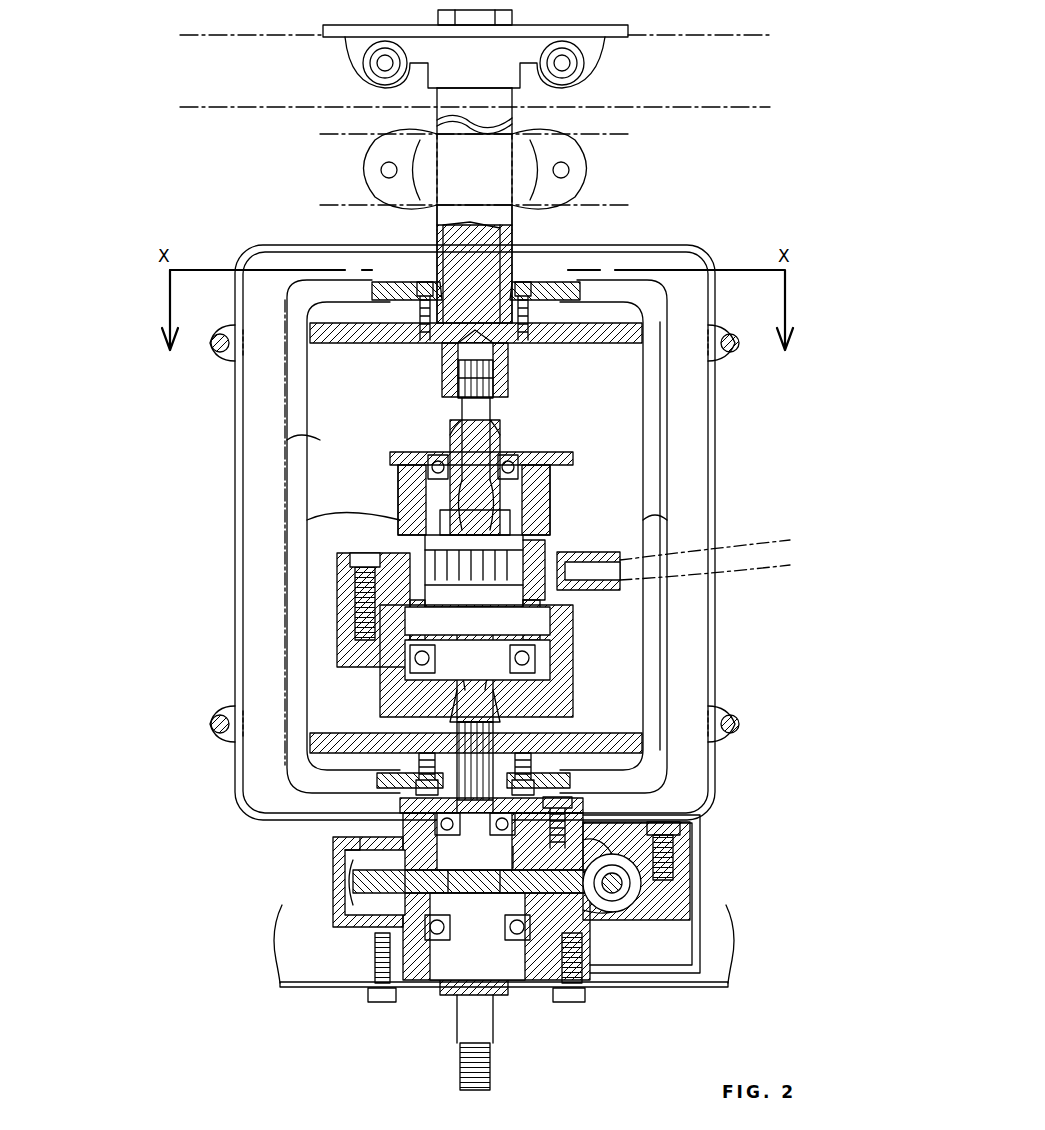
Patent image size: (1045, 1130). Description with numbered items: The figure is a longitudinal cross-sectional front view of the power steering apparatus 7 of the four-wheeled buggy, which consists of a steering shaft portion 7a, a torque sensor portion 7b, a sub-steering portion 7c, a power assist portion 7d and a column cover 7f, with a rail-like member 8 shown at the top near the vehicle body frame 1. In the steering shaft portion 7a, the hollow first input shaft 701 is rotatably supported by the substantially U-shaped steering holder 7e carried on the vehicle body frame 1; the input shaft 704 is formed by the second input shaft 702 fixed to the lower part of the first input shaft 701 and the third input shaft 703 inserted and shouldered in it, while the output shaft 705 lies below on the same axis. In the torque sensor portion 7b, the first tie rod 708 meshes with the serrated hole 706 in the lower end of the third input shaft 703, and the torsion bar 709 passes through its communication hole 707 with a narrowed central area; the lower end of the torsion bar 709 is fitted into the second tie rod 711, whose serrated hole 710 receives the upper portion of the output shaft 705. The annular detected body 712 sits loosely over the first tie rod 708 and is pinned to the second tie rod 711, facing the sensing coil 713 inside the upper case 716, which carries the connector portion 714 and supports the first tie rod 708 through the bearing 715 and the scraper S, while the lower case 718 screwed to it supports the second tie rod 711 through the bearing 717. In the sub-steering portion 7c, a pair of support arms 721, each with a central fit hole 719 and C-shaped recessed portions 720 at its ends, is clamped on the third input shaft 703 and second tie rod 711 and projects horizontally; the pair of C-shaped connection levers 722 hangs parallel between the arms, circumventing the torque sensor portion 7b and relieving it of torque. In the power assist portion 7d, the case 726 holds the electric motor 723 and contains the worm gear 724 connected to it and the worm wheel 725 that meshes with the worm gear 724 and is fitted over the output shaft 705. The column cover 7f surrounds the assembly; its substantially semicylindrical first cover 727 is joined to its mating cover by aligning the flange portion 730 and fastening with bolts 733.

The rail 8 is at (296, 52).
The steering shaft portion 7a is at (433, 121).
The vehicle body frame 1 is at (350, 133).
The power steering apparatus 7 is at (245, 228).
The first input shaft 701 is at (545, 135).
The steering holder 7e is at (562, 195).
The column cover 7f is at (712, 238).
The first cover 727 is at (716, 262).
The input shaft 704 is at (434, 240).
The second input shaft 702 is at (505, 246).
The recessed portion 720 is at (320, 330).
The support arms 721 is at (520, 345).
The bolts 733 is at (212, 345).
The flange portion 730 is at (222, 358).
The fit hole 719 is at (315, 348).
The third input shaft 703 is at (430, 366).
The serrated hole 706 is at (450, 400).
The communication hole 707 is at (435, 460).
The first tie rod 708 is at (505, 425).
The torsion bar 709 is at (505, 440).
The scraper S is at (520, 425).
The bearing 715 is at (556, 460).
The detected body 712 is at (550, 490).
The sensing coil 713 is at (548, 515).
The connection levers 722 is at (285, 443).
The torque sensor portion 7b is at (393, 480).
The sub-steering portion 7c is at (670, 480).
The upper case 716 is at (308, 520).
The connector portion 714 is at (622, 572).
The lower case 718 is at (340, 655).
The bearing 717 is at (535, 640).
The serrated hole 710 is at (418, 703).
The second tie rod 711 is at (525, 708).
The output shaft 705 is at (415, 812).
The power assist portion 7d is at (330, 855).
The worm wheel 725 is at (345, 858).
The worm gear 724 is at (695, 888).
The case 726 is at (355, 882).
The electric motor 723 is at (685, 920).